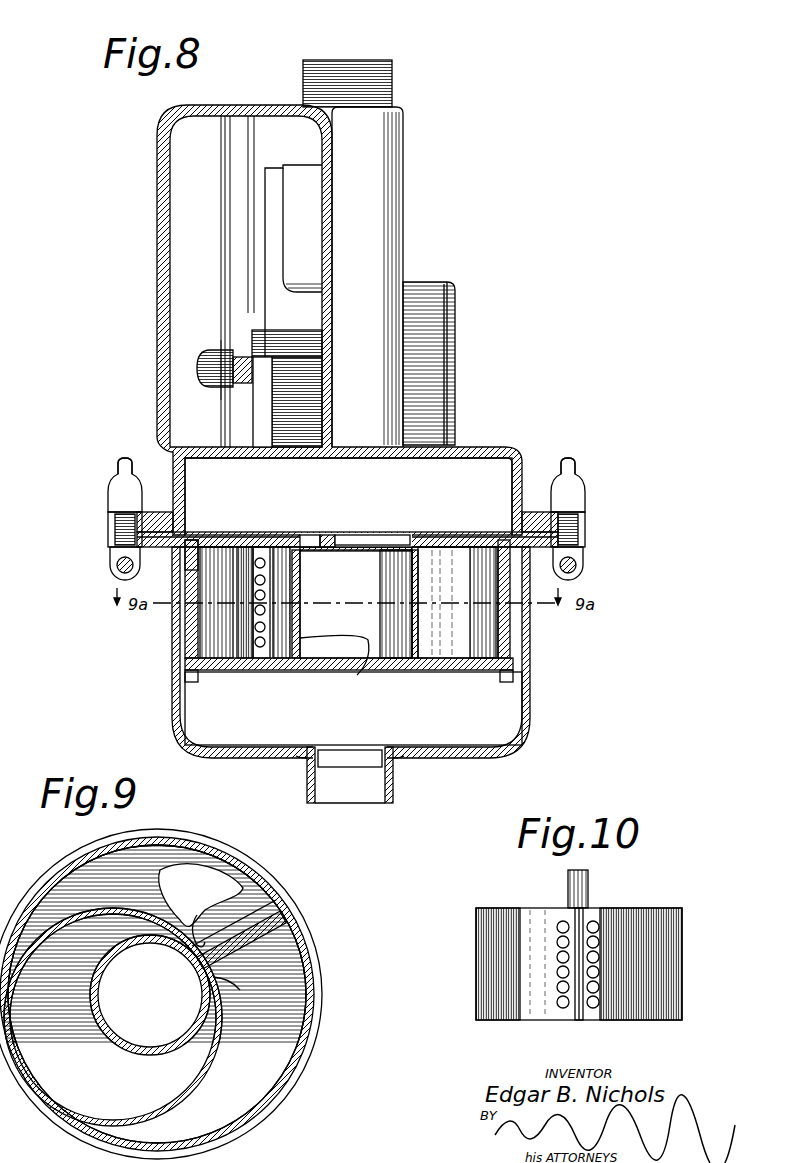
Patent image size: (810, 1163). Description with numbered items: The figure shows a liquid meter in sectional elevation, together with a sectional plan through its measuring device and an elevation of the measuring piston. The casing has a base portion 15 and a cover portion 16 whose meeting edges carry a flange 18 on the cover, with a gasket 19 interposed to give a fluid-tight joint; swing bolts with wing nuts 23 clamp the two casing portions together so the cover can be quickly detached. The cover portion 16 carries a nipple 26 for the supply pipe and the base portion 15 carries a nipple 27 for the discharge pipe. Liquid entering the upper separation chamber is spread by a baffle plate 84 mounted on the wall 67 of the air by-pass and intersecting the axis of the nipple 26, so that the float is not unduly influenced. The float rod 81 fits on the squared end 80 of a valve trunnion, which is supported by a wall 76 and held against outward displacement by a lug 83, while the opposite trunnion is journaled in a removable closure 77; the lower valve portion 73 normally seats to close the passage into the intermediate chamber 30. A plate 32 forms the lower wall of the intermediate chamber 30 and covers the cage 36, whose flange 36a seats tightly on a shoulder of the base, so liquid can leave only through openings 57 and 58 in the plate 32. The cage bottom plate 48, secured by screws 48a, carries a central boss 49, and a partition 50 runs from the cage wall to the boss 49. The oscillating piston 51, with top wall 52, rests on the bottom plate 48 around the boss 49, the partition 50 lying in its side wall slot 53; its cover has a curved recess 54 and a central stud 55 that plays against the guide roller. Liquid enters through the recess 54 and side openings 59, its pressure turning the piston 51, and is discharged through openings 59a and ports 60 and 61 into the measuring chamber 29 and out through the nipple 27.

In FIG. 8, the base portion 15 is at (172, 678).
In FIG. 8, the cover portion 16 is at (402, 260).
In FIG. 8, the flange 18 is at (108, 516).
In FIG. 8, the gasket 19 is at (153, 532).
In FIG. 8, the wing nut 23 is at (108, 476).
In FIG. 8, the nipple 26 is at (393, 73).
In FIG. 8, the nipple 27 is at (393, 786).
In FIG. 8, the measuring chamber 29 is at (353, 708).
In FIG. 8, the intermediate chamber 30 is at (348, 496).
In FIG. 8, the plate 32 is at (481, 540).
In FIG. 8, the cage 36 is at (498, 632).
In FIG. 9, the cage 36 is at (307, 963).
In FIG. 8, the flange 36a is at (185, 540).
In FIG. 8, the bottom plate 48 is at (475, 668).
In FIG. 9, the bottom plate 48 is at (267, 1045).
In FIG. 8, the screws 48a is at (508, 680).
In FIG. 9, the central boss 49 is at (110, 1033).
In FIG. 8, the partition 50 is at (300, 622).
In FIG. 9, the partition 50 is at (145, 1017).
In FIG. 8, the piston 51 is at (425, 616).
In FIG. 9, the piston 51 is at (155, 994).
In FIG. 10, the piston 51 is at (682, 960).
In FIG. 8, the top wall 52 is at (362, 550).
In FIG. 9, the top wall 52 is at (113, 1017).
In FIG. 10, the top wall 52 is at (507, 908).
In FIG. 10, the side wall slot 53 is at (578, 1017).
In FIG. 8, the curved recess 54 is at (316, 551).
In FIG. 10, the stud 55 is at (587, 883).
In FIG. 8, the opening 57 is at (387, 535).
In FIG. 8, the opening 58 is at (322, 535).
In FIG. 8, the side openings 59 is at (260, 602).
In FIG. 9, the side openings 59 is at (213, 977).
In FIG. 10, the side openings 59 is at (557, 927).
In FIG. 8, the openings 59a is at (347, 664).
In FIG. 9, the openings 59a is at (197, 920).
In FIG. 10, the openings 59a is at (598, 936).
In FIG. 8, the port 60 is at (246, 668).
In FIG. 9, the port 60 is at (207, 883).
In FIG. 8, the port 61 is at (280, 660).
In FIG. 9, the port 61 is at (257, 920).
In FIG. 8, the wall 67 is at (272, 172).
In FIG. 8, the valve portion 73 is at (297, 393).
In FIG. 8, the wall 76 is at (263, 405).
In FIG. 8, the removable closure 77 is at (457, 333).
In FIG. 8, the squared end 80 is at (240, 363).
In FIG. 8, the rod 81 is at (237, 353).
In FIG. 8, the lug 83 is at (207, 350).
In FIG. 8, the baffle plate 84 is at (307, 281).